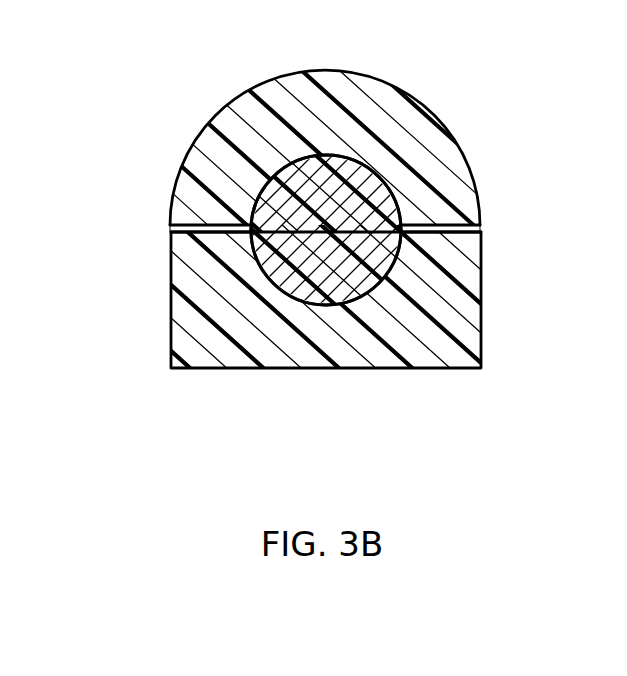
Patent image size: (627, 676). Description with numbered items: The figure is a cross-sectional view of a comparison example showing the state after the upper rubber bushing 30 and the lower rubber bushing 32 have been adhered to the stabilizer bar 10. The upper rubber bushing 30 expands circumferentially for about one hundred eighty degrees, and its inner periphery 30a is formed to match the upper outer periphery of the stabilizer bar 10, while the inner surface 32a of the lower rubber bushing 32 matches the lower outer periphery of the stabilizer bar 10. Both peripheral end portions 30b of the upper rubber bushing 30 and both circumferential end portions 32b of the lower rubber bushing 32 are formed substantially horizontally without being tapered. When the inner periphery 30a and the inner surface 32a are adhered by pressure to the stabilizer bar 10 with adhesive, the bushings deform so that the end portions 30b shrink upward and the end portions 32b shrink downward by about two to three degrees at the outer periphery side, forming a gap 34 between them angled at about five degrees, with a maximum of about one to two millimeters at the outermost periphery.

The stabilizer bar 10 is at (383, 205).
The upper rubber bushing 30 is at (378, 72).
The inner periphery 30a is at (352, 162).
The peripheral end portions 30b is at (486, 224).
The lower rubber bushing 32 is at (486, 347).
The inner surface 32a is at (370, 277).
The circumferential end portions 32b is at (490, 231).
The gap 34 is at (163, 228).